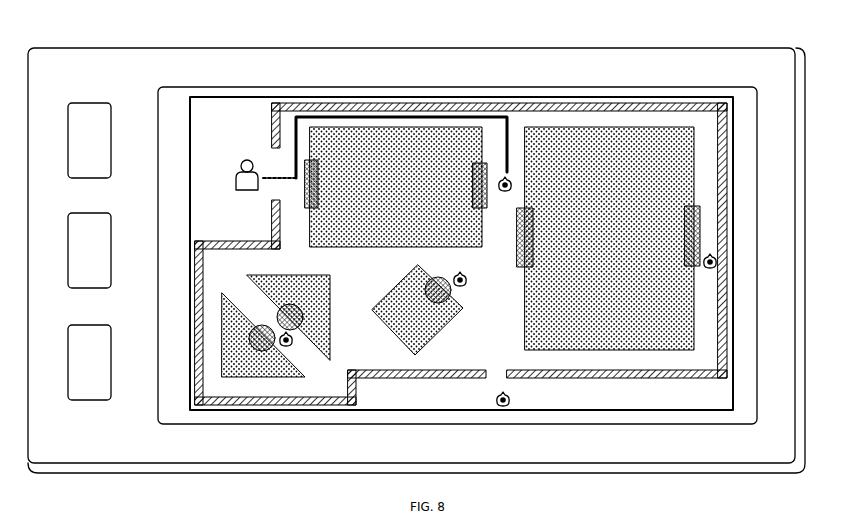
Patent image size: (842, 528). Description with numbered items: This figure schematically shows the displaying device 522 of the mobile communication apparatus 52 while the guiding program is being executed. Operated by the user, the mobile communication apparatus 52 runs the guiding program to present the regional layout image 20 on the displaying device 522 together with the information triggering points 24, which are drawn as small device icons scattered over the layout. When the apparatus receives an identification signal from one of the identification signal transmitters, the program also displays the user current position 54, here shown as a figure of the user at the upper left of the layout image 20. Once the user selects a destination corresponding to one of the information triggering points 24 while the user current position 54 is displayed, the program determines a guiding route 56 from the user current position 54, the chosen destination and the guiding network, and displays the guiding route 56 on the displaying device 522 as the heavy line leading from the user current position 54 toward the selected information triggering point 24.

The mobile communication apparatus 52 is at (352, 58).
The displaying device 522 is at (415, 86).
The regional layout image 20 is at (233, 108).
The guiding route 56 is at (463, 114).
The user current position 54 is at (247, 191).
The information triggering point 24 is at (503, 192).